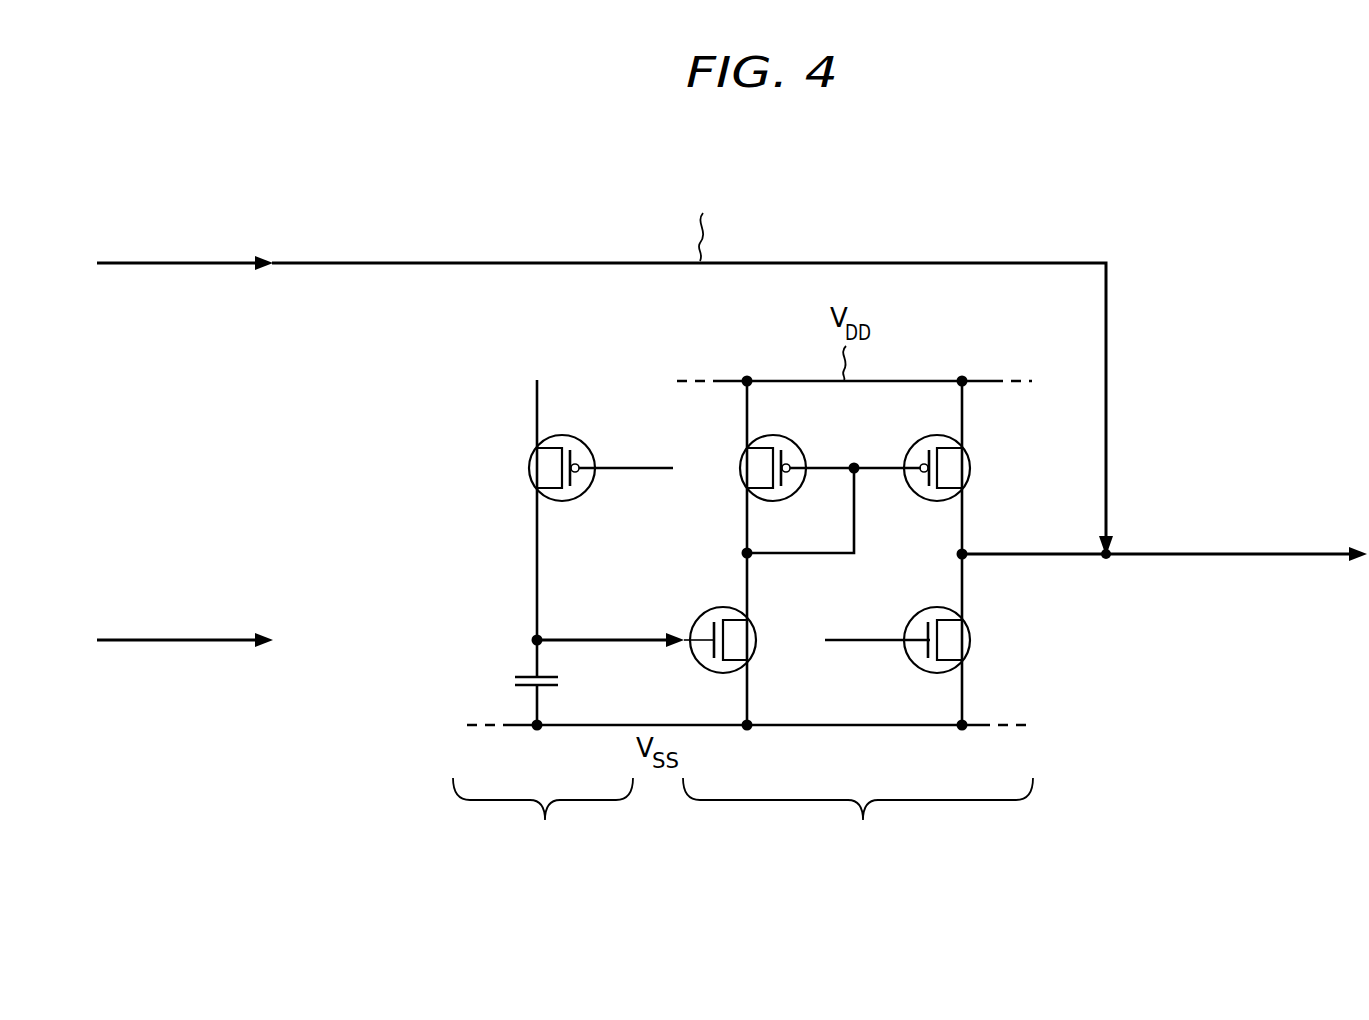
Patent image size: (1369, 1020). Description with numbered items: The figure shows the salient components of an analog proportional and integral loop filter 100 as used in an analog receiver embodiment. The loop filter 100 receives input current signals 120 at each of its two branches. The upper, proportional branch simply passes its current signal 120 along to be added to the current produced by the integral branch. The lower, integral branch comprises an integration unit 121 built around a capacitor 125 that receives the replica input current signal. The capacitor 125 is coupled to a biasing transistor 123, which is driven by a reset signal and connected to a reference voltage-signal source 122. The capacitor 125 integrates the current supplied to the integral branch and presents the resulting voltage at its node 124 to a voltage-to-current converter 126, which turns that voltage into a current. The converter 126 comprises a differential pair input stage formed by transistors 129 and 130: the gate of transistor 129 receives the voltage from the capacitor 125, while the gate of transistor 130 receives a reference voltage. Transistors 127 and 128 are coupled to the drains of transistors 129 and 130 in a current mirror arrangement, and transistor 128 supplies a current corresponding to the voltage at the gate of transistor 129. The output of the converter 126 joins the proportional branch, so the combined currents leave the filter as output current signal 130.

The proportional and integral loop filter 100 is at (1188, 232).
The input current signal 120 is at (204, 256).
The integration unit 121 is at (551, 837).
The reference voltage-signal source 122 is at (541, 371).
The biasing transistor 123 is at (577, 496).
The integration node 124 is at (541, 636).
The capacitor 125 is at (556, 688).
The voltage-to-current converter 126 is at (858, 837).
The transistor 127 is at (777, 436).
The transistor 128 is at (930, 502).
The transistor 129 is at (723, 607).
The transistor 130 is at (970, 642).